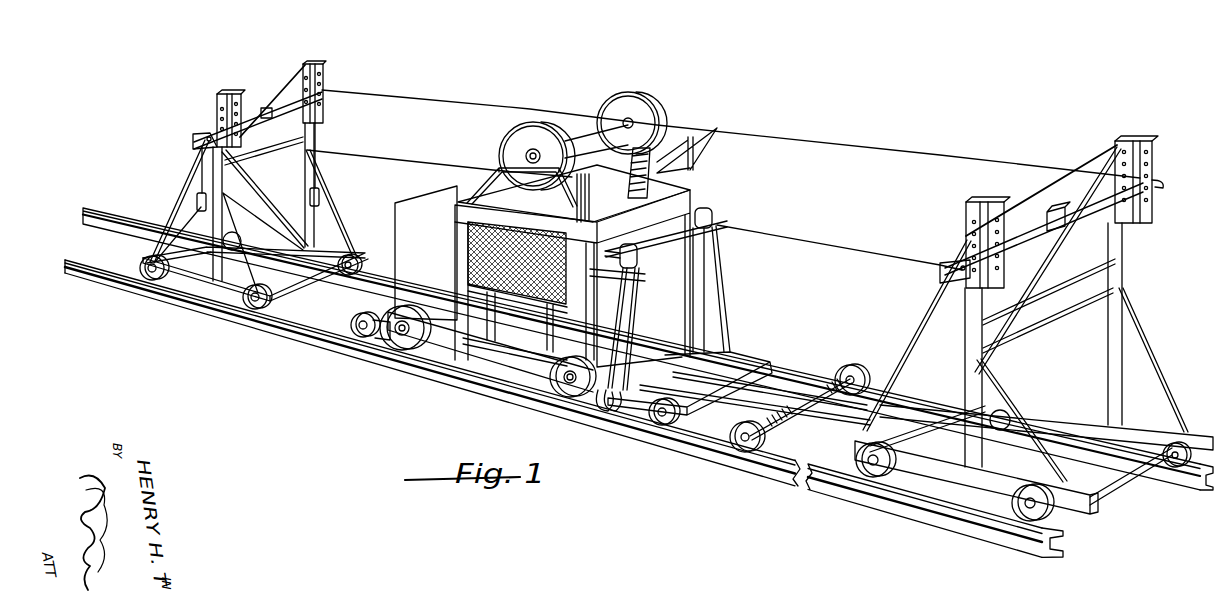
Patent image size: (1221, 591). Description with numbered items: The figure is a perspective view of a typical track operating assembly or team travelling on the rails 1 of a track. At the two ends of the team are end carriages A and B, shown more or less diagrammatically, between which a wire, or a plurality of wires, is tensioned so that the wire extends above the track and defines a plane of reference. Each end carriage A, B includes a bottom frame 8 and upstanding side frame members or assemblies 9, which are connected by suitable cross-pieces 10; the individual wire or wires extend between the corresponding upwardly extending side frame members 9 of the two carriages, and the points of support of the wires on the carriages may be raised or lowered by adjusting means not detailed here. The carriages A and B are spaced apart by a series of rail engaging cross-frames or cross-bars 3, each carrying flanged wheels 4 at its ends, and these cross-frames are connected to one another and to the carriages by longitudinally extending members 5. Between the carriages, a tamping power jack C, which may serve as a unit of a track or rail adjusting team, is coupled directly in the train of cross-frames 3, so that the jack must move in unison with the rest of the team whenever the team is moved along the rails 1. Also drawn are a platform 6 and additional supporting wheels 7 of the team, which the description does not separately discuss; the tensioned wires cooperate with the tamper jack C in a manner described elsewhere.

The rails 1 is at (797, 376).
The rail engaging cross-frames 3 is at (827, 374).
The flanged wheels 4 is at (740, 447).
The longitudinally extending members 5 is at (770, 404).
The platform 6 is at (725, 395).
The supporting wheels 7 is at (652, 420).
The bottom frame 8 is at (212, 283).
The upstanding side frame members 9 is at (222, 177).
The cross-pieces 10 is at (252, 188).
The end carriage A is at (1060, 407).
The end carriage B is at (332, 242).
The tamping power jack C is at (437, 263).